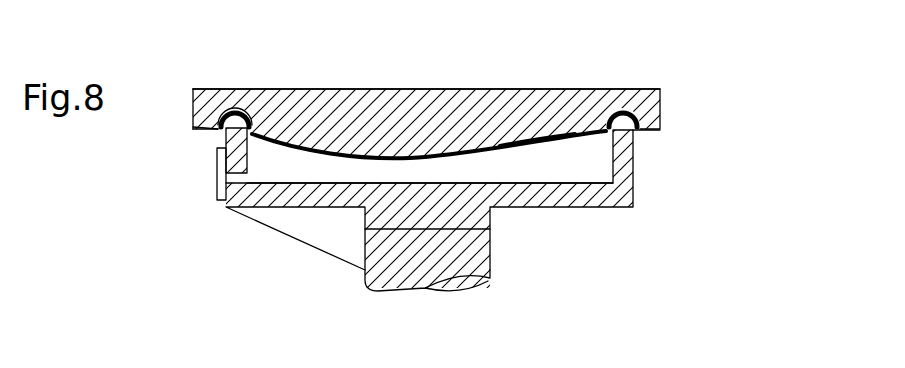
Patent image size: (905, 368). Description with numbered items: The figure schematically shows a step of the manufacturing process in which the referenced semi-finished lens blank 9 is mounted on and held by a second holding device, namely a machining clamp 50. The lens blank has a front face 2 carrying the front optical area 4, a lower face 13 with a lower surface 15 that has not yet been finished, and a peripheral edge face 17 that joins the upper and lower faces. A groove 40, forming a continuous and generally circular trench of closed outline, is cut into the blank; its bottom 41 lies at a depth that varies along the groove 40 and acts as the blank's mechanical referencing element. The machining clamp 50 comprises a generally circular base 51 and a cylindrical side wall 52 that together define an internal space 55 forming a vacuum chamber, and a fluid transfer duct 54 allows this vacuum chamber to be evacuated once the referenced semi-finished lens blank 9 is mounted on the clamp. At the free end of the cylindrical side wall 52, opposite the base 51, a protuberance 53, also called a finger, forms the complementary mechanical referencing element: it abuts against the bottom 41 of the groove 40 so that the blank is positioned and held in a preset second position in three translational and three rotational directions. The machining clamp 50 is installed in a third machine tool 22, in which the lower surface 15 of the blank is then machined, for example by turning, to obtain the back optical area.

The front face 2 is at (558, 140).
The front optical area 4 is at (538, 152).
The referenced semi-finished lens blank 9 is at (452, 184).
The lower face 13 is at (304, 88).
The lower surface 15 is at (568, 87).
The peripheral edge face 17 is at (193, 108).
The third machine tool 22 is at (452, 292).
The groove 40 is at (636, 136).
The bottom 41 is at (241, 107).
The machining clamp 50 is at (452, 184).
The base 51 is at (334, 198).
The cylindrical side wall 52 is at (452, 184).
The protuberance 53 is at (214, 105).
The fluid transfer duct 54 is at (218, 176).
The internal space 55 is at (291, 172).